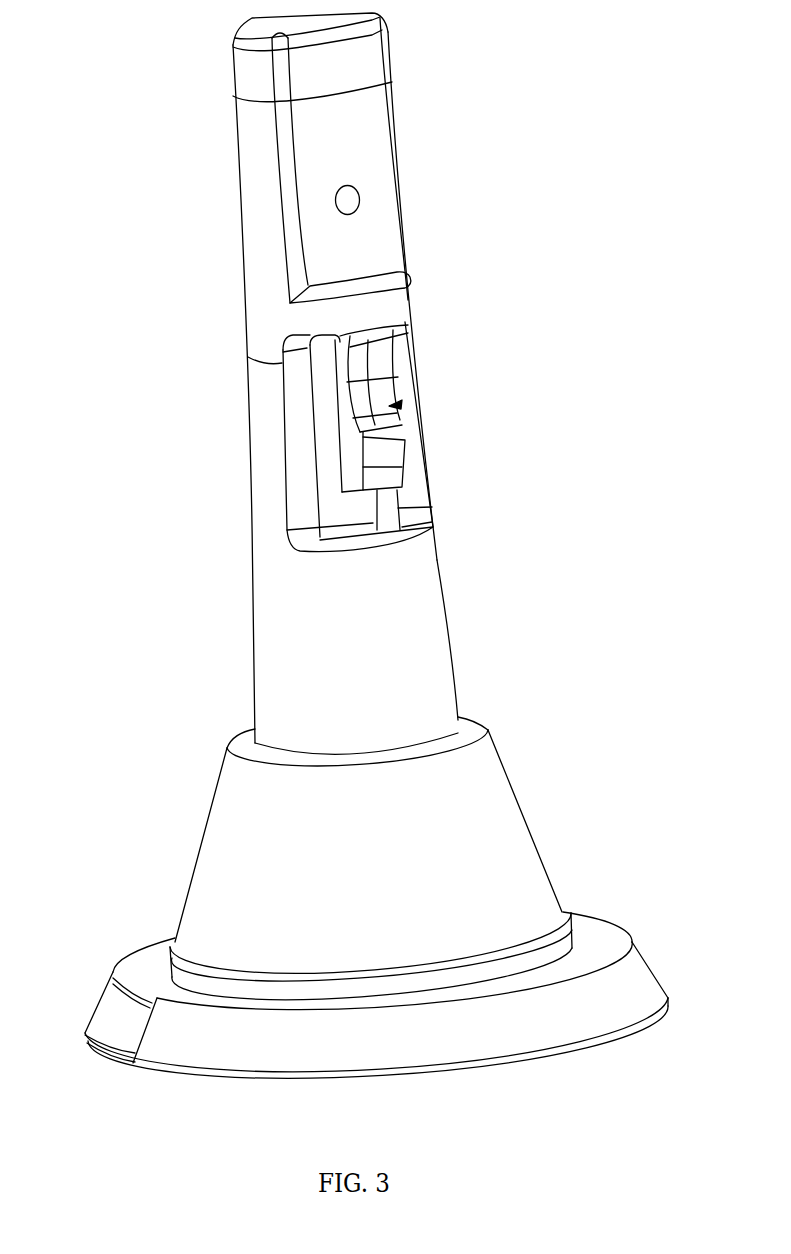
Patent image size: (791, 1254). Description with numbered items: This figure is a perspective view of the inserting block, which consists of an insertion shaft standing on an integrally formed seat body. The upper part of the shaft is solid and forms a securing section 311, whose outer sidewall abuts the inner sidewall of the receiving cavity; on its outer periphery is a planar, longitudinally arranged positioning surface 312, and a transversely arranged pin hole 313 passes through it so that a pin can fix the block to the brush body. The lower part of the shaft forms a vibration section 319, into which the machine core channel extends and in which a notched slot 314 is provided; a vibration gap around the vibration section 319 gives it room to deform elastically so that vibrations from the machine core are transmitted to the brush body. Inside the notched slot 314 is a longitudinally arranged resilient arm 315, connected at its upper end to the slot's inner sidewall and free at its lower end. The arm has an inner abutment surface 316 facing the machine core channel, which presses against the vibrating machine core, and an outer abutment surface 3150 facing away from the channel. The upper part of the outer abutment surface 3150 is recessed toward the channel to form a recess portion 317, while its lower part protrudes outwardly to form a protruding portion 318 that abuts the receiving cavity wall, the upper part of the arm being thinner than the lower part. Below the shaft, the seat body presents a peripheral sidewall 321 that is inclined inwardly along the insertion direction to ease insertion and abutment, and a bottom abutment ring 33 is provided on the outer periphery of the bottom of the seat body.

The securing section 311 is at (262, 193).
The positioning surface 312 is at (360, 128).
The pin hole 313 is at (353, 200).
The notched slot 314 is at (322, 433).
The resilient arm 315 is at (352, 450).
The inner abutment surface 316 is at (312, 415).
The recess portion 317 is at (377, 388).
The outer abutment surface 3150 is at (395, 404).
The protruding portion 318 is at (387, 452).
The vibration section 319 is at (263, 442).
The peripheral sidewall 321 is at (473, 823).
The bottom abutment ring 33 is at (113, 1020).